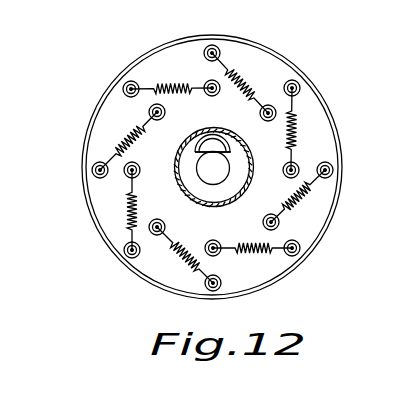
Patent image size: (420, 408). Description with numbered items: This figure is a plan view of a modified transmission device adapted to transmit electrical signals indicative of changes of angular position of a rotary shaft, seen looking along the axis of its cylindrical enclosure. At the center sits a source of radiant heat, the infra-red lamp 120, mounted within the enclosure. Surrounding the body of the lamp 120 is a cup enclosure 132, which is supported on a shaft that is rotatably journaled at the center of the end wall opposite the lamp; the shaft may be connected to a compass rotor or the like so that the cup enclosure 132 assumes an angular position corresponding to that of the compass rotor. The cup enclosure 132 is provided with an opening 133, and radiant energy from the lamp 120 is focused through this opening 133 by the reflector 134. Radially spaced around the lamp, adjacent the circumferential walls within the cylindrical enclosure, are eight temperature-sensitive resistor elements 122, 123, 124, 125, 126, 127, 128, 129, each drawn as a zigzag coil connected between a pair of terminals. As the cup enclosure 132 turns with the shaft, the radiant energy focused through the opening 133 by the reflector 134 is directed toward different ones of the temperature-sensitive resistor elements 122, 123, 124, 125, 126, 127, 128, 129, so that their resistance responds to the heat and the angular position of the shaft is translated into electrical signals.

The infra-red lamp 120 is at (229, 173).
The temperature-sensitive resistor element 122 is at (238, 84).
The temperature-sensitive resistor element 123 is at (297, 123).
The temperature-sensitive resistor element 124 is at (303, 192).
The temperature-sensitive resistor element 125 is at (262, 251).
The temperature-sensitive resistor element 126 is at (177, 250).
The temperature-sensitive resistor element 127 is at (128, 211).
The temperature-sensitive resistor element 128 is at (122, 138).
The temperature-sensitive resistor element 129 is at (160, 86).
The cup enclosure 132 is at (249, 152).
The opening 133 is at (248, 207).
The reflector 134 is at (243, 114).